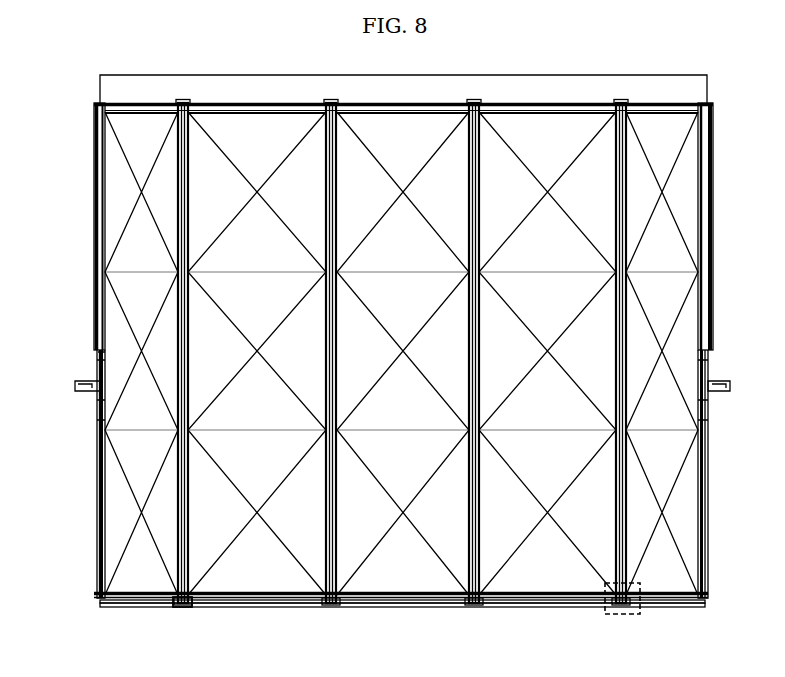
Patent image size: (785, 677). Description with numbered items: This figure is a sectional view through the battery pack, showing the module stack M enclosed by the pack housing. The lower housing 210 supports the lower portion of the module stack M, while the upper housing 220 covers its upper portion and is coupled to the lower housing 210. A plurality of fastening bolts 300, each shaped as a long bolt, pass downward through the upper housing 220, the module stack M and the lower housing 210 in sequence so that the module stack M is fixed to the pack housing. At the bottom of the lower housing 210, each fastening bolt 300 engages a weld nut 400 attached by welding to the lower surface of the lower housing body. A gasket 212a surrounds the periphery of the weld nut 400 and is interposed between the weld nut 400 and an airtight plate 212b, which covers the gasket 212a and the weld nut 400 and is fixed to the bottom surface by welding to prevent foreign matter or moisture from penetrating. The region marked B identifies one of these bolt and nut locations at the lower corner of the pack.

The upper housing 220 is at (95, 140).
The lower housing 210 is at (97, 465).
The fastening bolt 300 is at (183, 207).
The module stack M is at (665, 225).
The weld nut 400 is at (168, 605).
The gasket 212a is at (238, 598).
The airtight plate 212b is at (306, 600).
The detail region B is at (622, 615).